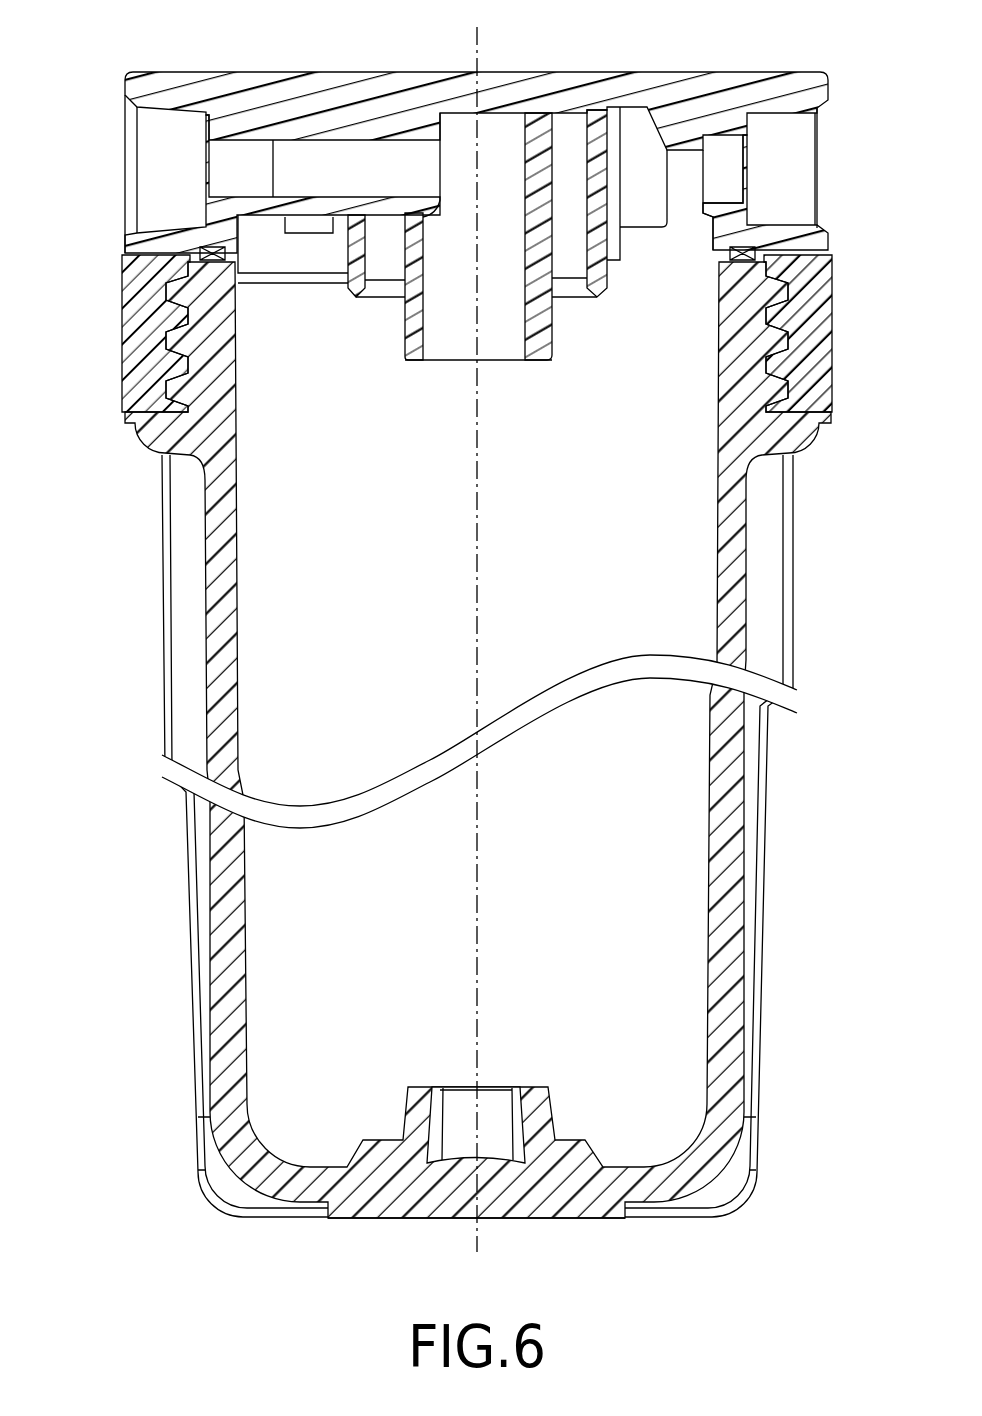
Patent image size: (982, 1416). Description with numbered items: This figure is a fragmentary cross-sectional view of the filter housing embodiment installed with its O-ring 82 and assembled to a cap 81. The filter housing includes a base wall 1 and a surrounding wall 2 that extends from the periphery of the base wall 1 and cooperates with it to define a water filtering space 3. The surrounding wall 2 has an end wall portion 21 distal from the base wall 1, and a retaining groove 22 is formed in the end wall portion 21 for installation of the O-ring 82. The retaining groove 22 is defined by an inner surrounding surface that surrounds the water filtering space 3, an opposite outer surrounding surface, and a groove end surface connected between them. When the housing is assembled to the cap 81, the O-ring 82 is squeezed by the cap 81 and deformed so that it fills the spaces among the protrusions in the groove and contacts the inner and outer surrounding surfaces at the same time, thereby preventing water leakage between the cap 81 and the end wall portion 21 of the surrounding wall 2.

The base wall 1 is at (369, 1220).
The surrounding wall 2 is at (210, 993).
The water filtering space 3 is at (290, 1092).
The end wall portion 21 is at (203, 300).
The retaining groove 22 is at (203, 250).
The cap 81 is at (332, 82).
The O-ring 82 is at (215, 256).